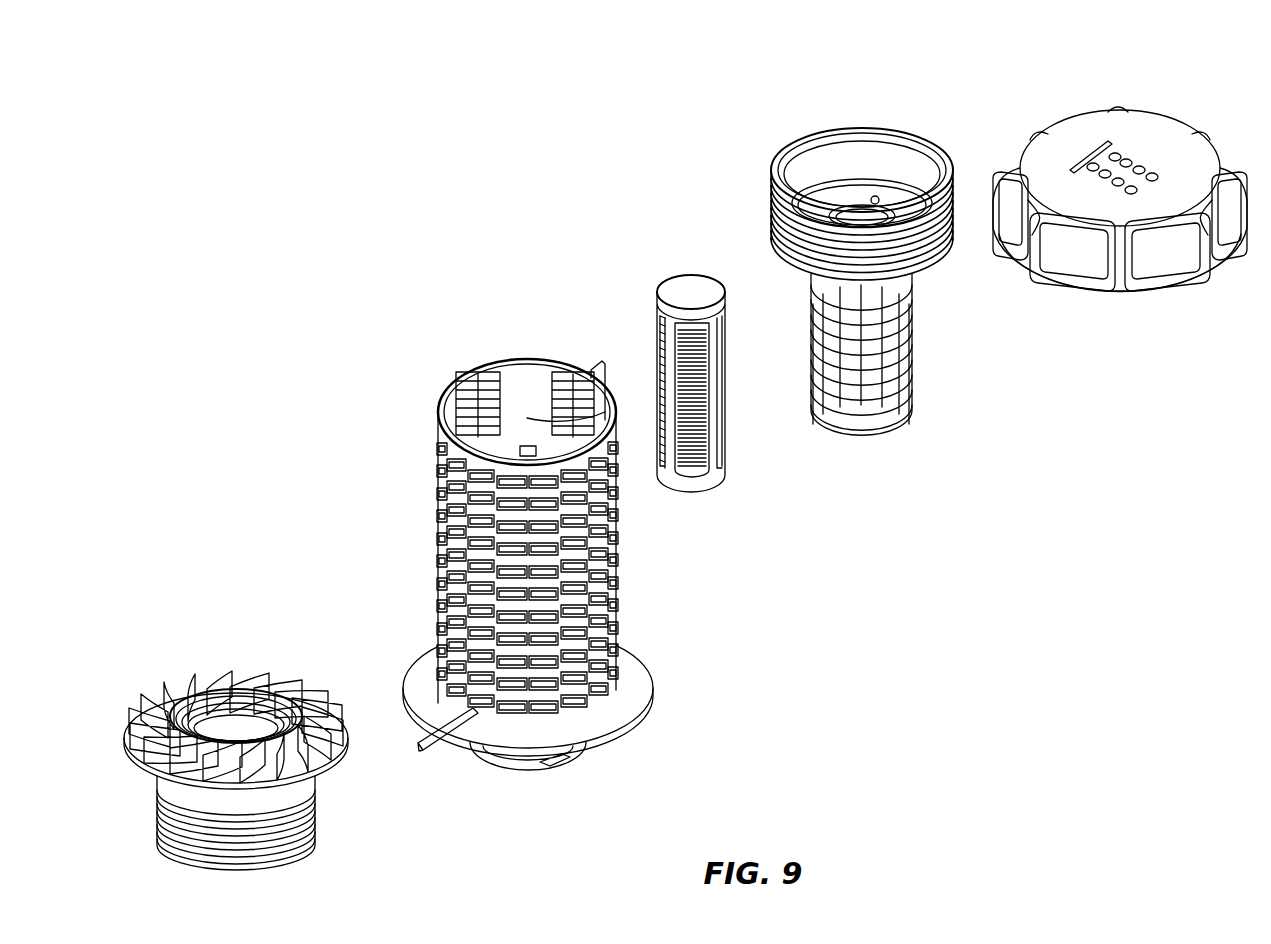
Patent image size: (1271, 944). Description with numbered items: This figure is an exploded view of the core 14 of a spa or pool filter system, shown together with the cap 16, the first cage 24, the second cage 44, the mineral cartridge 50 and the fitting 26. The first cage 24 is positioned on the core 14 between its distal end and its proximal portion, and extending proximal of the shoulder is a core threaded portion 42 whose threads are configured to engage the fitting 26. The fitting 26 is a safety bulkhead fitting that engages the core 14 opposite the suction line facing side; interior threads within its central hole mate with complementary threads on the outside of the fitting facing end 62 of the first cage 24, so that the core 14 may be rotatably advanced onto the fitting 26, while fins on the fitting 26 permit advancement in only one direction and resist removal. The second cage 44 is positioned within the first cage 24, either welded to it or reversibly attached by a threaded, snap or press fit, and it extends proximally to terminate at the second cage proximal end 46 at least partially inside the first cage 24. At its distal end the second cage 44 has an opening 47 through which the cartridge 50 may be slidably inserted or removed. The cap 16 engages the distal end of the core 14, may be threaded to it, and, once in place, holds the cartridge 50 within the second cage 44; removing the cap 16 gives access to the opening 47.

The core 14 is at (887, 83).
The cap 16 is at (1152, 140).
The first cage 24 is at (566, 598).
The fitting 26 is at (197, 635).
The core threaded portion 42 is at (527, 758).
The second cage 44 is at (910, 278).
The second cage proximal end 46 is at (882, 438).
The opening 47 is at (860, 213).
The mineral cartridge 50 is at (717, 470).
The fitting facing end 62 is at (567, 752).